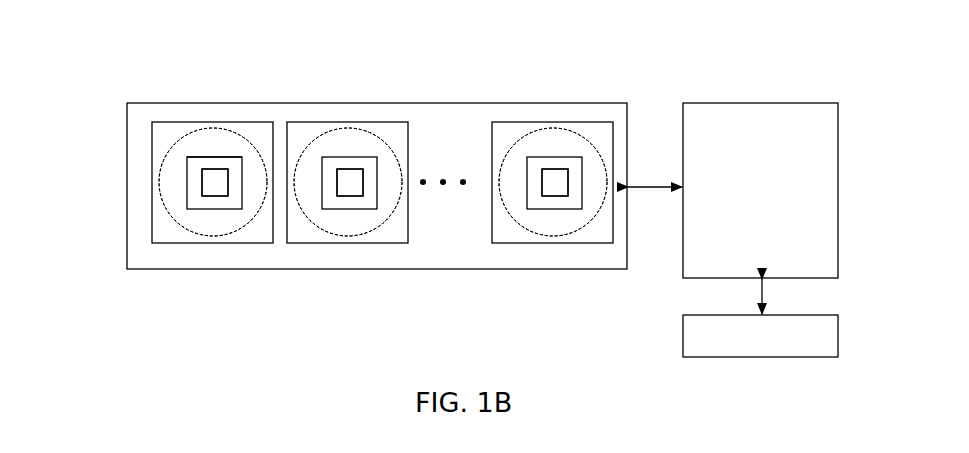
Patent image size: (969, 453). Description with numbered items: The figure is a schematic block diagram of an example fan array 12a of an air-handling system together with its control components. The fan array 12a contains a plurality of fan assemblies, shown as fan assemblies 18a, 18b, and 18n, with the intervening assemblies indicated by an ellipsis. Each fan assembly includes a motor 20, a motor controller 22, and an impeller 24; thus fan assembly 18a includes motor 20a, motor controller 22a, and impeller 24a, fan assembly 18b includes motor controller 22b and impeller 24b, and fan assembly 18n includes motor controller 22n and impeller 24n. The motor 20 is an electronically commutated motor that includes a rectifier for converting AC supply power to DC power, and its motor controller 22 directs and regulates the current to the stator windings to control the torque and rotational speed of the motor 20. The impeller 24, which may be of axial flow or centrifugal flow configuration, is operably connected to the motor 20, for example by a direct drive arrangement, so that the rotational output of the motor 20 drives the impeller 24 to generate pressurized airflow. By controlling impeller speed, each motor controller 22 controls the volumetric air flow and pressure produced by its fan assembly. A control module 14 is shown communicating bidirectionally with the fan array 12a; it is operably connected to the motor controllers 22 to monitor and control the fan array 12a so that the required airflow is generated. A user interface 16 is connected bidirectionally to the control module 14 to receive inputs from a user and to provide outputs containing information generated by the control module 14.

The fan array 12a is at (429, 102).
The control module 14 is at (838, 172).
The user interface 16 is at (839, 340).
The fan assembly 18a is at (198, 112).
The fan assembly 18b is at (333, 112).
The fan assembly 18n is at (538, 112).
The motor 20 is at (187, 209).
The motor 20a is at (187, 170).
The motor controller 22 is at (215, 196).
The motor controller 22a is at (226, 196).
The motor controller 22b is at (361, 196).
The motor controller 22n is at (566, 196).
The impeller 24 is at (176, 140).
The impeller 24a is at (254, 144).
The impeller 24b is at (387, 141).
The impeller 24n is at (593, 143).